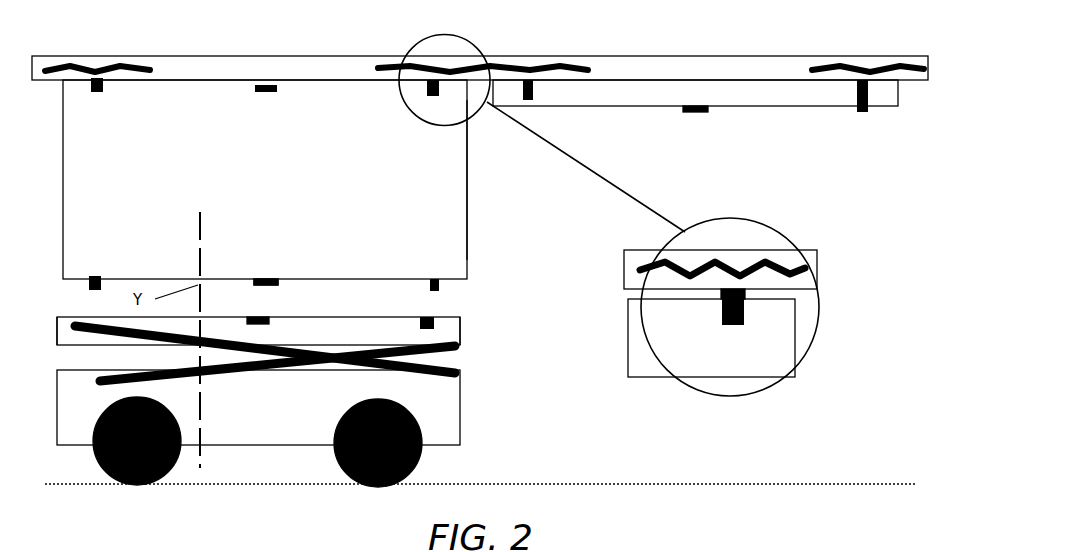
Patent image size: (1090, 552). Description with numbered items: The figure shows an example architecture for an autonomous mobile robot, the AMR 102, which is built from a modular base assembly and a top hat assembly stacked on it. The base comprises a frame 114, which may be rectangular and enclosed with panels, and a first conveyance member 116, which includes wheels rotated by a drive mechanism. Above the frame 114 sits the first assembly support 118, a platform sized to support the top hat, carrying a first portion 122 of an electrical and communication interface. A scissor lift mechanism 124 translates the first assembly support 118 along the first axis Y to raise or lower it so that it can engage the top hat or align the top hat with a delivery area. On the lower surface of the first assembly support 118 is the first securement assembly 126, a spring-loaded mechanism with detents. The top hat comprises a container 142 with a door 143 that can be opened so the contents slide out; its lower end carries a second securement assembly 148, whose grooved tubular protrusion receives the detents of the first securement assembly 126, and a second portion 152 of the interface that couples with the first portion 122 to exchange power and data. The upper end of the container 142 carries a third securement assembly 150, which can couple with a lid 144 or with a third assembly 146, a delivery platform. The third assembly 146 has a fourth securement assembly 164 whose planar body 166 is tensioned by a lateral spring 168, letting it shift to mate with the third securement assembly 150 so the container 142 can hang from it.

The AMR 102 is at (473, 310).
The frame 114 is at (437, 403).
The first conveyance member 116 is at (393, 448).
The first assembly support 118 is at (68, 327).
The first portion of electrical and communication interface 122 is at (268, 319).
The scissor lift mechanism 124 is at (370, 358).
The first securement assembly 126 is at (95, 320).
The container 142 is at (265, 185).
The door 143 is at (467, 227).
The lid 144 is at (822, 107).
The third assembly 146 is at (727, 73).
The second securement assembly 148 is at (95, 280).
The third securement assembly 150 is at (95, 80).
The second portion of electrical and communication interface 152 is at (268, 278).
The fourth securement assembly 164 is at (688, 215).
The planar body 166 is at (738, 272).
The lateral spring 168 is at (813, 265).